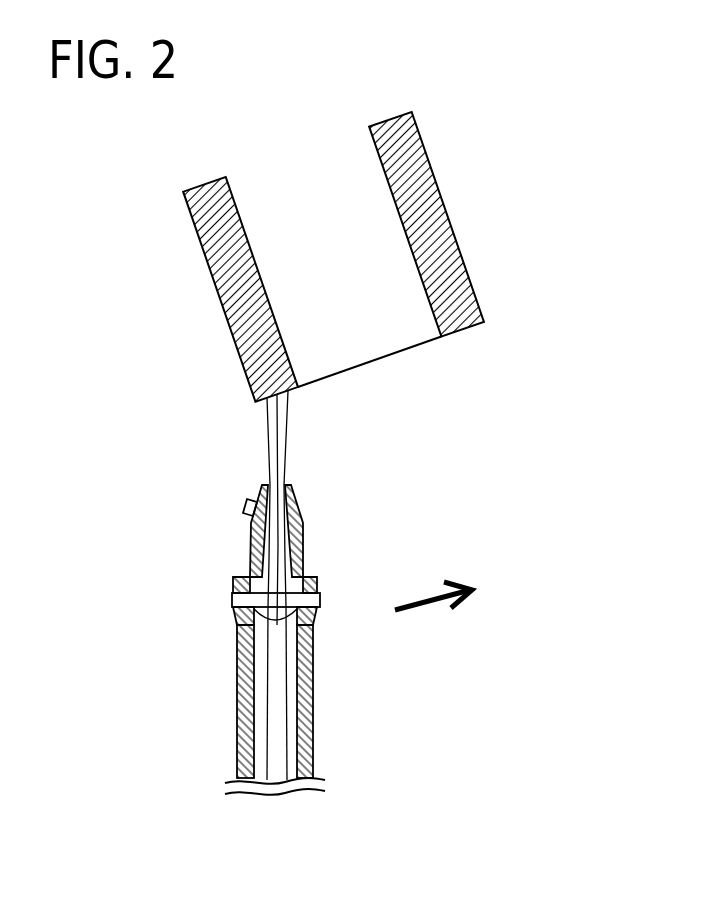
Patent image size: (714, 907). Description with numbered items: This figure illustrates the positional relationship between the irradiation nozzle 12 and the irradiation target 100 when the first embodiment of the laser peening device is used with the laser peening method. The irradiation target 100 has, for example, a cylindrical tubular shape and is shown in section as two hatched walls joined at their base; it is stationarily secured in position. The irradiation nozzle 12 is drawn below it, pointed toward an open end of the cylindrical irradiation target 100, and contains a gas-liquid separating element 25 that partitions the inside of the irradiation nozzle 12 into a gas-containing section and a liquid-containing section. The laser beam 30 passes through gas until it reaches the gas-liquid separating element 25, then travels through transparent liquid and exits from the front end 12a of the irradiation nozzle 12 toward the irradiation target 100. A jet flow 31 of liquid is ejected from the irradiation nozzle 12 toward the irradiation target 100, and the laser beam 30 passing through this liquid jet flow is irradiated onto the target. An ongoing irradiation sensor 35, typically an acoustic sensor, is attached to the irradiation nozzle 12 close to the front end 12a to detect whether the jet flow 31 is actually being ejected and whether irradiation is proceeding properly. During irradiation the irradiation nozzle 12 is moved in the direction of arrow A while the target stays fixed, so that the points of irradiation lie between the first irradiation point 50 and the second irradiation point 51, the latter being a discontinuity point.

The irradiation target 100 is at (383, 280).
The first irradiation point 50 is at (258, 403).
The second irradiation point 51 is at (300, 390).
The jet flow 31 is at (268, 433).
The irradiation nozzle 12 is at (294, 538).
The front end 12a is at (290, 485).
The ongoing irradiation sensor 35 is at (245, 514).
The gas-liquid separating element 25 is at (237, 647).
The laser beam 30 is at (277, 770).
The arrow A is at (430, 605).